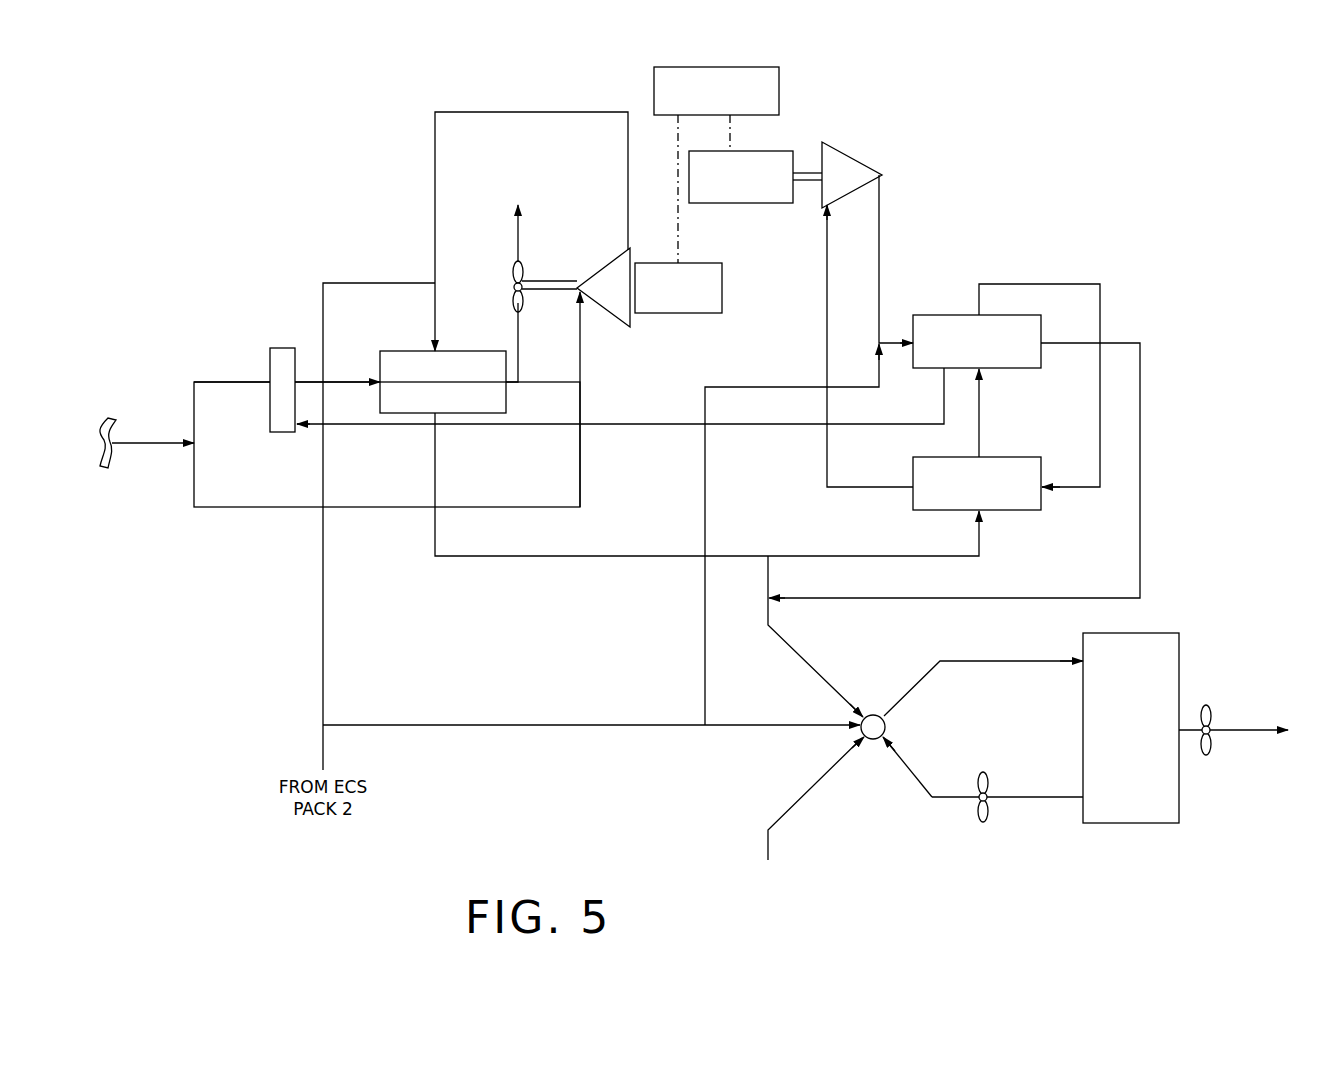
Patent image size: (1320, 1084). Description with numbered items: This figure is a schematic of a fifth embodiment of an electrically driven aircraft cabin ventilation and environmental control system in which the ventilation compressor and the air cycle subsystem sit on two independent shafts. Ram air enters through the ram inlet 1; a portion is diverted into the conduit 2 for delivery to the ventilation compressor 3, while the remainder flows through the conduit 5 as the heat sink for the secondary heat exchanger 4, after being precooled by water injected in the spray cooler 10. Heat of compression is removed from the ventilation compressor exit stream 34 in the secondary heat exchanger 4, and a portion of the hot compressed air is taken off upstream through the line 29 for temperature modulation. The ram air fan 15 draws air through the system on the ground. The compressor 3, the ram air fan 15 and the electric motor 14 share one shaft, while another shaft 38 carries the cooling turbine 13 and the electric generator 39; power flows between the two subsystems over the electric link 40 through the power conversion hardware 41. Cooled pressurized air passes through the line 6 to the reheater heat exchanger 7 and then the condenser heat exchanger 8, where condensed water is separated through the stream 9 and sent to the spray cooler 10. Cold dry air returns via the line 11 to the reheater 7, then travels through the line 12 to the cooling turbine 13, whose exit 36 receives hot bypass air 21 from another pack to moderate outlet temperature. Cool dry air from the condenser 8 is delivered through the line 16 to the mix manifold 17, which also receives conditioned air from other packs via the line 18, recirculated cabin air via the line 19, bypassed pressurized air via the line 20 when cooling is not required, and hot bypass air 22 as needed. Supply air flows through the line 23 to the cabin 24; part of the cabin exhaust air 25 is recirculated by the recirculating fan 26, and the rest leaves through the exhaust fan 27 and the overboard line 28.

The ram inlet 1 is at (145, 440).
The conduit 2 is at (232, 508).
The ventilation compressor 3 is at (604, 275).
The secondary heat exchanger 4 is at (470, 414).
The conduit 5 is at (216, 380).
The line 6 is at (612, 555).
The reheater heat exchanger 7 is at (1010, 511).
The condenser heat exchanger 8 is at (1028, 369).
The stream 9 is at (768, 426).
The spray cooler 10 is at (285, 347).
The line 11 is at (1016, 283).
The line 12 is at (880, 490).
The cooling turbine 13 is at (848, 162).
The electric motor 14 is at (688, 314).
The ram air fan 15 is at (514, 264).
The line 16 is at (1090, 597).
The mix manifold 17 is at (886, 728).
The line 18 is at (802, 790).
The line 19 is at (912, 782).
The line 20 is at (767, 580).
The hot bypass air 21 is at (704, 470).
The hot bypass air 22 is at (757, 724).
The line 23 is at (916, 680).
The cabin 24 is at (1160, 640).
The cabin exhaust air 25 is at (1040, 798).
The recirculating fan 26 is at (980, 818).
The exhaust fan 27 is at (1207, 752).
The overboard line 28 is at (1258, 728).
The line 29 is at (365, 282).
The ventilation compressor exit stream 34 is at (496, 112).
The turbine exit 36 is at (880, 222).
The shaft 38 is at (811, 172).
The electric generator 39 is at (752, 204).
The electric link 40 is at (680, 232).
The power conversion hardware 41 is at (780, 93).